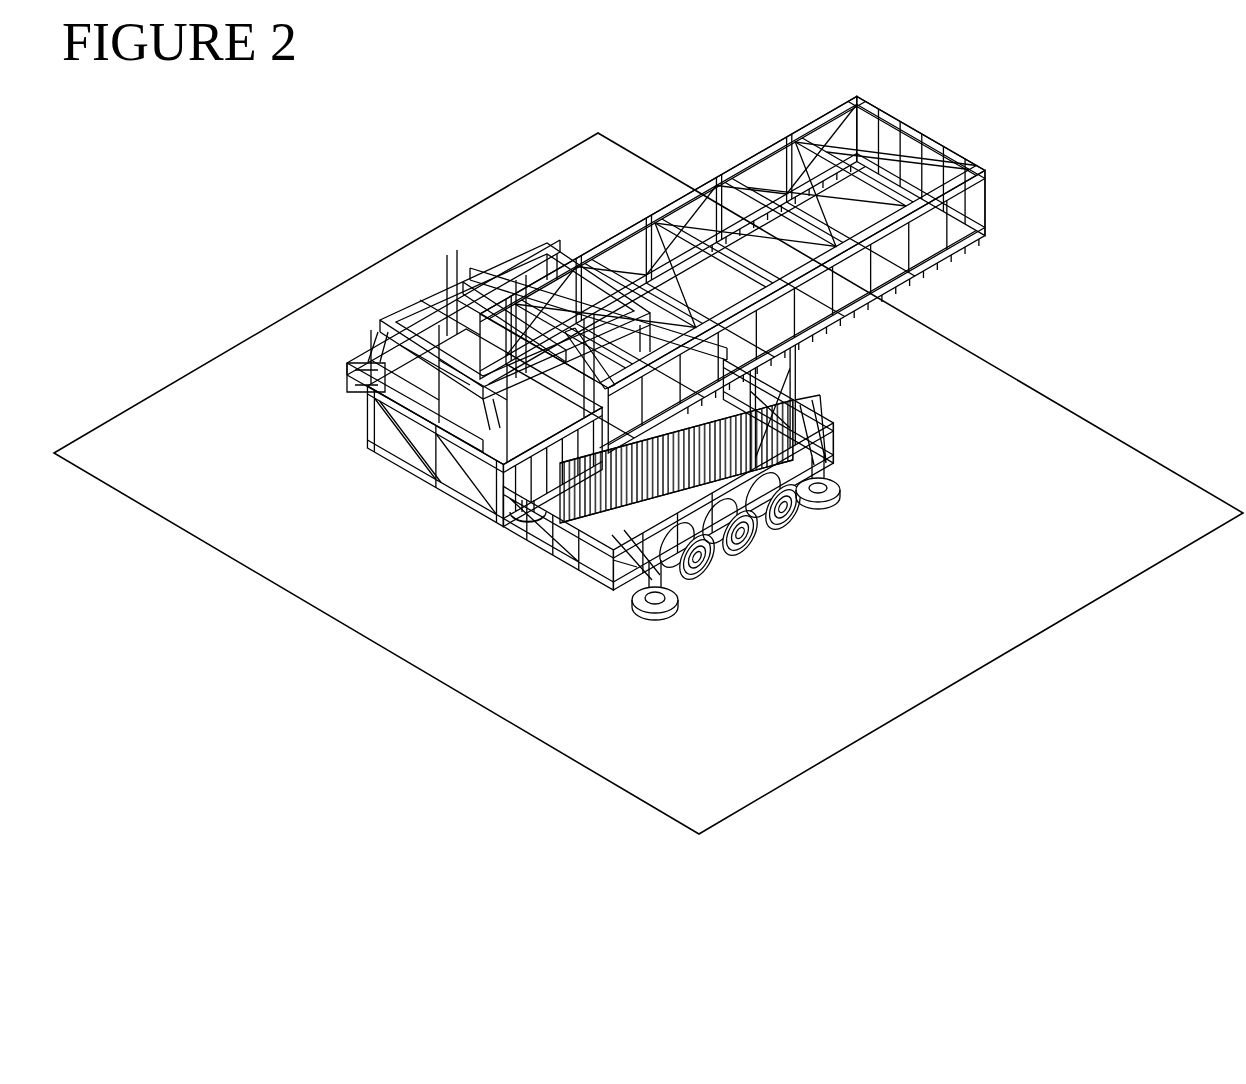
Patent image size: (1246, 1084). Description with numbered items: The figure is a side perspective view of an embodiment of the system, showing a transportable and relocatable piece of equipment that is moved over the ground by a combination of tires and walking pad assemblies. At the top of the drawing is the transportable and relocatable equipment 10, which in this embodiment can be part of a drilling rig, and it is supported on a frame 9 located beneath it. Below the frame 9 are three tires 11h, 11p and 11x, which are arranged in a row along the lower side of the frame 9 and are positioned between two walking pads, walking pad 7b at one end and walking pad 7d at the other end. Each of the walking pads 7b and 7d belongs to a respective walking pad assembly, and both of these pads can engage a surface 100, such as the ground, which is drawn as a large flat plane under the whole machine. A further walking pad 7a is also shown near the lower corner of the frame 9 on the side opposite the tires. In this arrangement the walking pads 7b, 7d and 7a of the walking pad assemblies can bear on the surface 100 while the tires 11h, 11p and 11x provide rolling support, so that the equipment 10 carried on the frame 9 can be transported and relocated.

The transportable and relocatable equipment 10 is at (972, 218).
The surface 100 is at (1086, 415).
The frame 9 is at (610, 548).
The walking pad 7a is at (520, 522).
The walking pad 7b is at (680, 607).
The walking pad 7d is at (840, 500).
The tire 11h is at (703, 568).
The tire 11p is at (755, 548).
The tire 11x is at (802, 524).